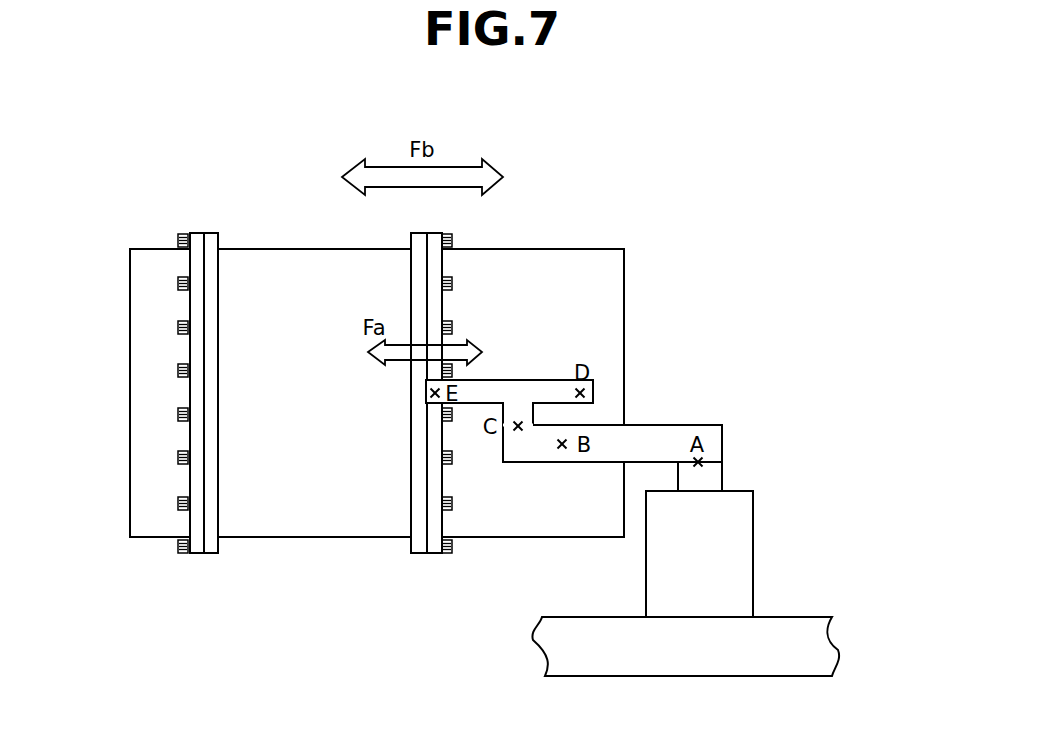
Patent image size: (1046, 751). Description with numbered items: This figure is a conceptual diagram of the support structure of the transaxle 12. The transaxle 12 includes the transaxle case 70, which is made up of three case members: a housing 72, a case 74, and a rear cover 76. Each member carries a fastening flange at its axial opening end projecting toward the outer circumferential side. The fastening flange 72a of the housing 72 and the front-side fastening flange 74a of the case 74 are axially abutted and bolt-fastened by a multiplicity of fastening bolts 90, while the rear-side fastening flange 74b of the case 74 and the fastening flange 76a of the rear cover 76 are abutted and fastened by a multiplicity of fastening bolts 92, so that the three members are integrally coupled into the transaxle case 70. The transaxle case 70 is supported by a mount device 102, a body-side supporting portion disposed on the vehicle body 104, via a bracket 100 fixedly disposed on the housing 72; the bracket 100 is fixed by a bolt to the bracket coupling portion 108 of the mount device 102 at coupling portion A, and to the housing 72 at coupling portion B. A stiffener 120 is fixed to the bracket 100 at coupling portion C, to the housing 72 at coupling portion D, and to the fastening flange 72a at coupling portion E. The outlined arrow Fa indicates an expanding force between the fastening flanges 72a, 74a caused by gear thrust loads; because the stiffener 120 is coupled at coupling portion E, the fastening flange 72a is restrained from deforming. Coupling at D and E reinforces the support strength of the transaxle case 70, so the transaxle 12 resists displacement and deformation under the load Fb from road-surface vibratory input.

The transaxle 12 is at (618, 212).
The transaxle case 70 is at (193, 202).
The housing 72 is at (553, 262).
The fastening flange 72a is at (435, 533).
The case 74 is at (298, 248).
The fastening flange 74a is at (417, 512).
The fastening flange 74b is at (210, 515).
The rear cover 76 is at (140, 297).
The fastening flange 76a is at (192, 523).
The fastening bolts 90 is at (450, 282).
The fastening bolts 92 is at (180, 370).
The bracket 100 is at (650, 438).
The mount device 102 is at (736, 540).
The vehicle body 104 is at (673, 661).
The bracket coupling portion 108 is at (713, 474).
The stiffener 120 is at (537, 390).